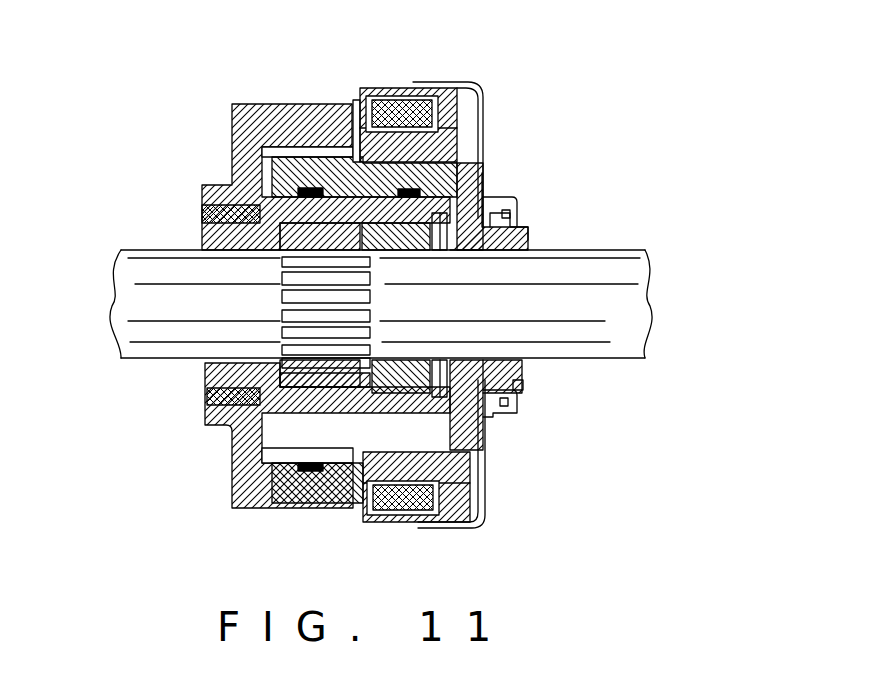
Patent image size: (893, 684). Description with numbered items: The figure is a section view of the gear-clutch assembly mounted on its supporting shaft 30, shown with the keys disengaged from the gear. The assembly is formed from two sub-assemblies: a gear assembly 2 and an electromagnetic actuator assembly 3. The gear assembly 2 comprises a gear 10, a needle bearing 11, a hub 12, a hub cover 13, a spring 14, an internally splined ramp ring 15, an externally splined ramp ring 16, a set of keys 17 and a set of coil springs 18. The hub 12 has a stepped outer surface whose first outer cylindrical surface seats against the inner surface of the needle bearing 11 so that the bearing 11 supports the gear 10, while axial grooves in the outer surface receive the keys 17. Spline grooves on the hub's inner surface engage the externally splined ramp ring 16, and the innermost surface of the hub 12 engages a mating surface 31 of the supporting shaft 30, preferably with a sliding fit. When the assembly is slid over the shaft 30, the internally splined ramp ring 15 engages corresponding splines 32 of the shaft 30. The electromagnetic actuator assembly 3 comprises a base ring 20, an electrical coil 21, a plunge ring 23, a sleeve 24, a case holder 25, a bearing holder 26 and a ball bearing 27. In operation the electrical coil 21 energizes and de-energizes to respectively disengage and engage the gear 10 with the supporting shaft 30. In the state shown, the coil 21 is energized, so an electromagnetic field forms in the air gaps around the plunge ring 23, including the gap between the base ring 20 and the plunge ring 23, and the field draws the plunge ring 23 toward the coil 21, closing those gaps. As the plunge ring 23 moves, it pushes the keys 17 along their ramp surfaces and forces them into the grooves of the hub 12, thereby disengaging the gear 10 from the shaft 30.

The gear assembly 2 is at (263, 70).
The electromagnetic actuator assembly 3 is at (466, 66).
The gear 10 is at (223, 108).
The needle bearing 11 is at (206, 397).
The hub 12 is at (202, 228).
The hub cover 13 is at (524, 384).
The spring 14 is at (428, 242).
The internally splined ramp ring 15 is at (282, 251).
The externally splined ramp ring 16 is at (398, 248).
The set of keys 17 is at (337, 158).
The set of coil springs 18 is at (263, 153).
The base ring 20 is at (375, 478).
The electrical coil 21 is at (407, 518).
The plunge ring 23 is at (463, 458).
The sleeve 24 is at (355, 152).
The case holder 25 is at (481, 530).
The bearing holder 26 is at (512, 417).
The ball bearing 27 is at (514, 215).
The supporting shaft 30 is at (100, 290).
The mating surface 31 is at (168, 262).
The splines 32 is at (282, 320).